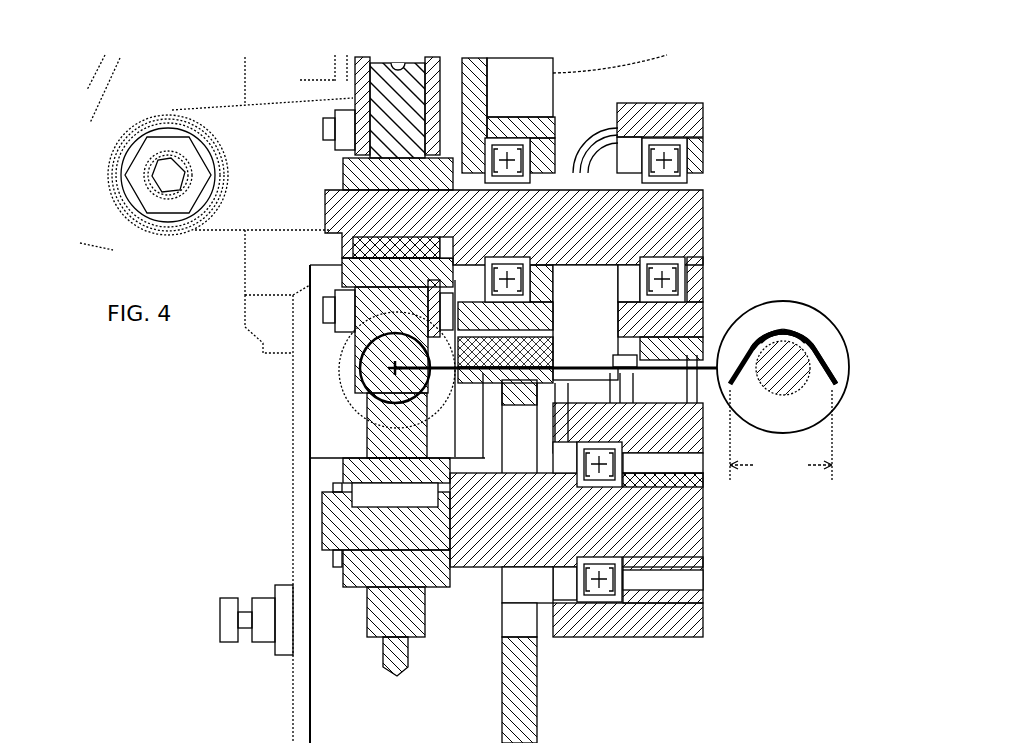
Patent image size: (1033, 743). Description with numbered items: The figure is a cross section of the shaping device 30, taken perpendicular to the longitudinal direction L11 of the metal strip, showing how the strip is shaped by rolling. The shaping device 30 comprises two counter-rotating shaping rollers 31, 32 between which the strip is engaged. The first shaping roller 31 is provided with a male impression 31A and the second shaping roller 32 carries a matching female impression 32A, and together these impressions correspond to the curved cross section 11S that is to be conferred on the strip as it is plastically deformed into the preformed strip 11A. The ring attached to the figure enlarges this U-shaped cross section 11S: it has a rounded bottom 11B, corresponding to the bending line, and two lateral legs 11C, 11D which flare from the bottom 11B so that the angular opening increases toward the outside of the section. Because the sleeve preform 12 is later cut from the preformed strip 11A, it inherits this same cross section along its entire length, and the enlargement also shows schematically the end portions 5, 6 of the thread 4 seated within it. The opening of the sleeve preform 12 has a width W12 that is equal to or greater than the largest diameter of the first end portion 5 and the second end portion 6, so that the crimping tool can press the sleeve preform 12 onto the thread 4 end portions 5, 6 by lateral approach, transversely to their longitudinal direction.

The thread 4 is at (833, 435).
The first end portion 5 is at (833, 435).
The second end portion 6 is at (786, 380).
The preformed strip 11A is at (823, 240).
The rounded bottom 11B is at (777, 326).
The lateral leg 11C is at (743, 352).
The lateral leg 11D is at (821, 355).
The curved cross section 11S is at (796, 323).
The sleeve preform 12 is at (770, 318).
The shaping device 30 is at (190, 434).
The shaping roller 31 is at (322, 550).
The male impression 31A is at (387, 673).
The shaping roller 32 is at (340, 288).
The female impression 32A is at (397, 68).
The longitudinal direction L11 is at (393, 369).
The width of the opening W12 is at (781, 435).